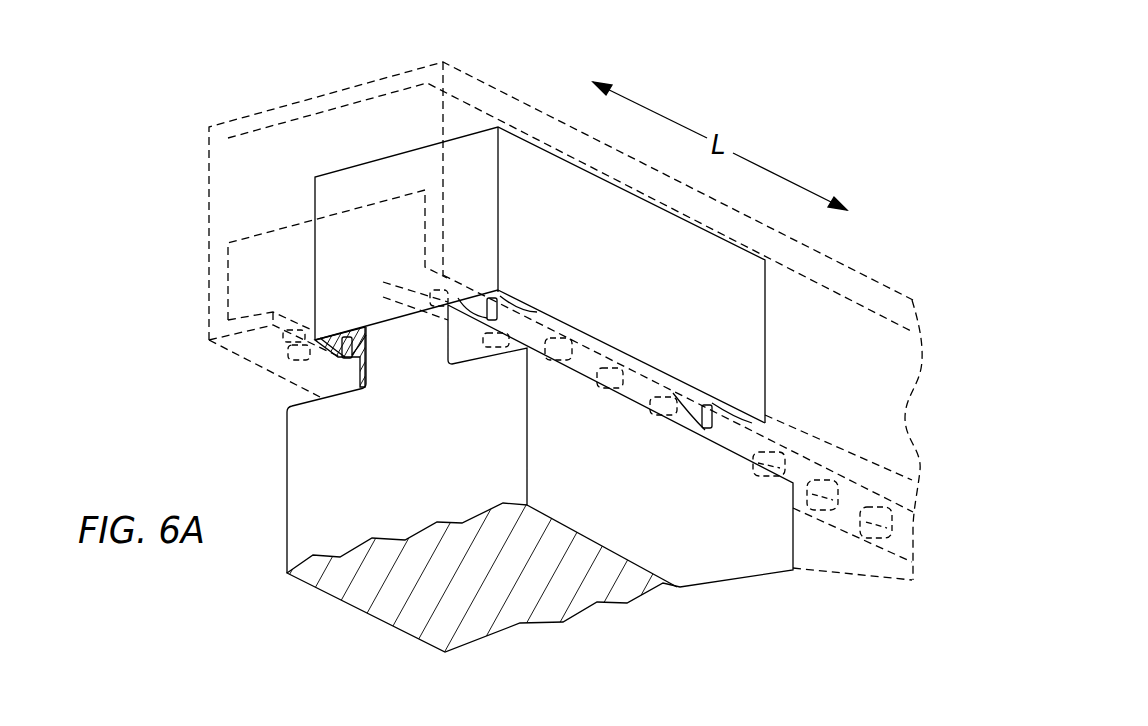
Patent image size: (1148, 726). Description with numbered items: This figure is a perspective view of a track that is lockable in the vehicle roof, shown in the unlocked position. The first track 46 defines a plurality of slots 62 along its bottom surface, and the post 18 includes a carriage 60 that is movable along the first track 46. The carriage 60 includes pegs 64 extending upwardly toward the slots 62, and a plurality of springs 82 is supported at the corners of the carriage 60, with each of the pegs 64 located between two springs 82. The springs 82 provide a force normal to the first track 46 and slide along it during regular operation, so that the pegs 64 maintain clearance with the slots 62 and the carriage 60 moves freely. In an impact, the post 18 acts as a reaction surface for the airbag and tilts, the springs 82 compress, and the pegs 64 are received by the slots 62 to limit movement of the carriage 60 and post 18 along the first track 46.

The post 18 is at (723, 563).
The first track 46 is at (250, 113).
The carriage 60 is at (365, 178).
The slots 62 is at (320, 397).
The pegs 64 is at (342, 337).
The springs 82 is at (330, 340).